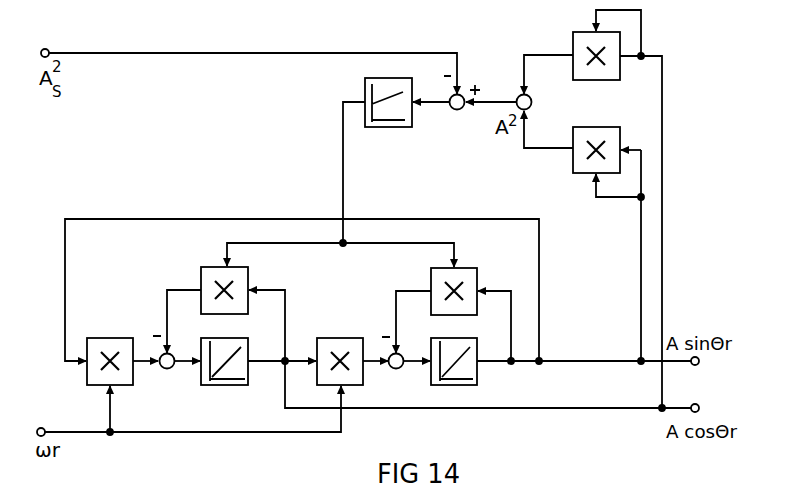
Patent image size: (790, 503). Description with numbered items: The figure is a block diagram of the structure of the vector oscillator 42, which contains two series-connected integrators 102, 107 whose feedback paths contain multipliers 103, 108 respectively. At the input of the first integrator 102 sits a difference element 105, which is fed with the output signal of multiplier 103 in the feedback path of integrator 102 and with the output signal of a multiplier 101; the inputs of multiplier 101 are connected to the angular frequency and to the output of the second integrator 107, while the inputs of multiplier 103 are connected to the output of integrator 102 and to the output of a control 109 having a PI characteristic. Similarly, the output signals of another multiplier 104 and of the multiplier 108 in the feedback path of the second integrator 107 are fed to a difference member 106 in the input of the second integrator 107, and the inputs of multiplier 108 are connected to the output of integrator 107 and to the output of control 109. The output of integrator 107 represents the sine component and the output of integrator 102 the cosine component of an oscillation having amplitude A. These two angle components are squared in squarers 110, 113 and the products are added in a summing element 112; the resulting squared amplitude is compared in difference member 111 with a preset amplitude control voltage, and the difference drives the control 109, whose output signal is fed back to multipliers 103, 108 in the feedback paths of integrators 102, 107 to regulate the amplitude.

The vector oscillator 42 is at (264, 197).
The multiplier 101 is at (118, 337).
The first integrator 102 is at (214, 386).
The multiplier 103 is at (210, 267).
The multiplier 104 is at (333, 338).
The difference element 105 is at (165, 369).
The difference member 106 is at (395, 369).
The second integrator 107 is at (478, 381).
The multiplier 108 is at (473, 268).
The control 109 is at (407, 127).
The squarer 110 is at (614, 127).
The difference member 111 is at (462, 110).
The summing element 112 is at (532, 102).
The squarer 113 is at (573, 40).